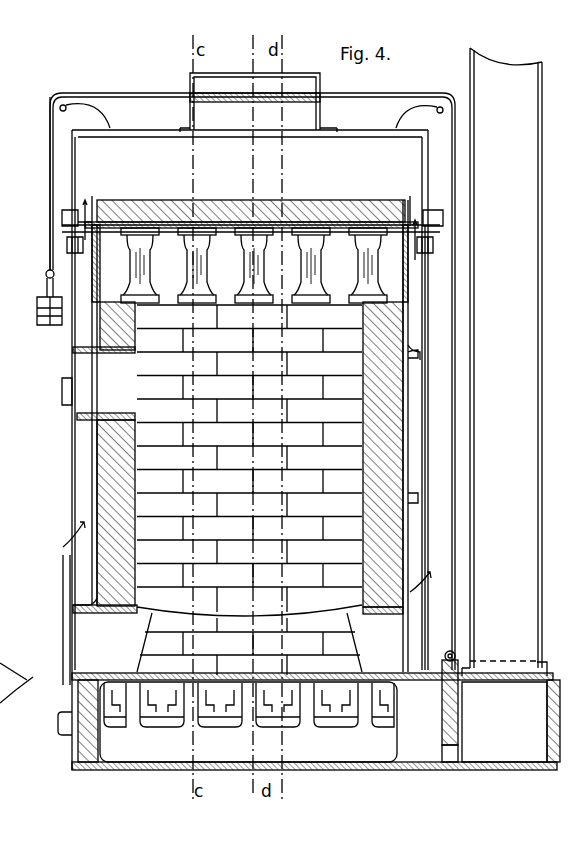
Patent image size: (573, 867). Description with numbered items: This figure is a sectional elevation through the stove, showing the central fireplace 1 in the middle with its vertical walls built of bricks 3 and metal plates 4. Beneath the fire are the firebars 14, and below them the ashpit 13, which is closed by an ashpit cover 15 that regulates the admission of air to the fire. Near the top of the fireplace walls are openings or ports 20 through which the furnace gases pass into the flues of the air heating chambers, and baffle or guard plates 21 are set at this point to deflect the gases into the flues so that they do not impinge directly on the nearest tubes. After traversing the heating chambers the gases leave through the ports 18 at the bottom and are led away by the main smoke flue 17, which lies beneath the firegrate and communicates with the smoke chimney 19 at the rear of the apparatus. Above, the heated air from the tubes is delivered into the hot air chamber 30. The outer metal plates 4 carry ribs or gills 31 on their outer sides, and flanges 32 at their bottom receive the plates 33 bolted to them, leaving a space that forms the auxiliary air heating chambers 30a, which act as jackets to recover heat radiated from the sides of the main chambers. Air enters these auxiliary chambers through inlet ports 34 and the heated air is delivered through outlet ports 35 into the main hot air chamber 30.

The central fireplace 1 is at (208, 442).
The bricks 3 is at (105, 487).
The metal plates 4 is at (93, 505).
The ashpit 13 is at (340, 646).
The firebars 14 is at (222, 612).
The ashpit cover 15 is at (63, 657).
The main smoke flue 17 is at (137, 750).
The ports 18 is at (213, 718).
The smoke chimney 19 is at (520, 204).
The openings or ports 20 is at (280, 243).
The baffle or guard plates 21 is at (192, 223).
The hot air chamber 30 is at (147, 155).
The auxiliary air heating chambers 30a is at (90, 322).
The ribs or gills 31 is at (420, 354).
The flanges 32 is at (78, 606).
The plates 33 is at (72, 436).
The inlet ports 34 is at (73, 536).
The outlet ports 35 is at (62, 222).